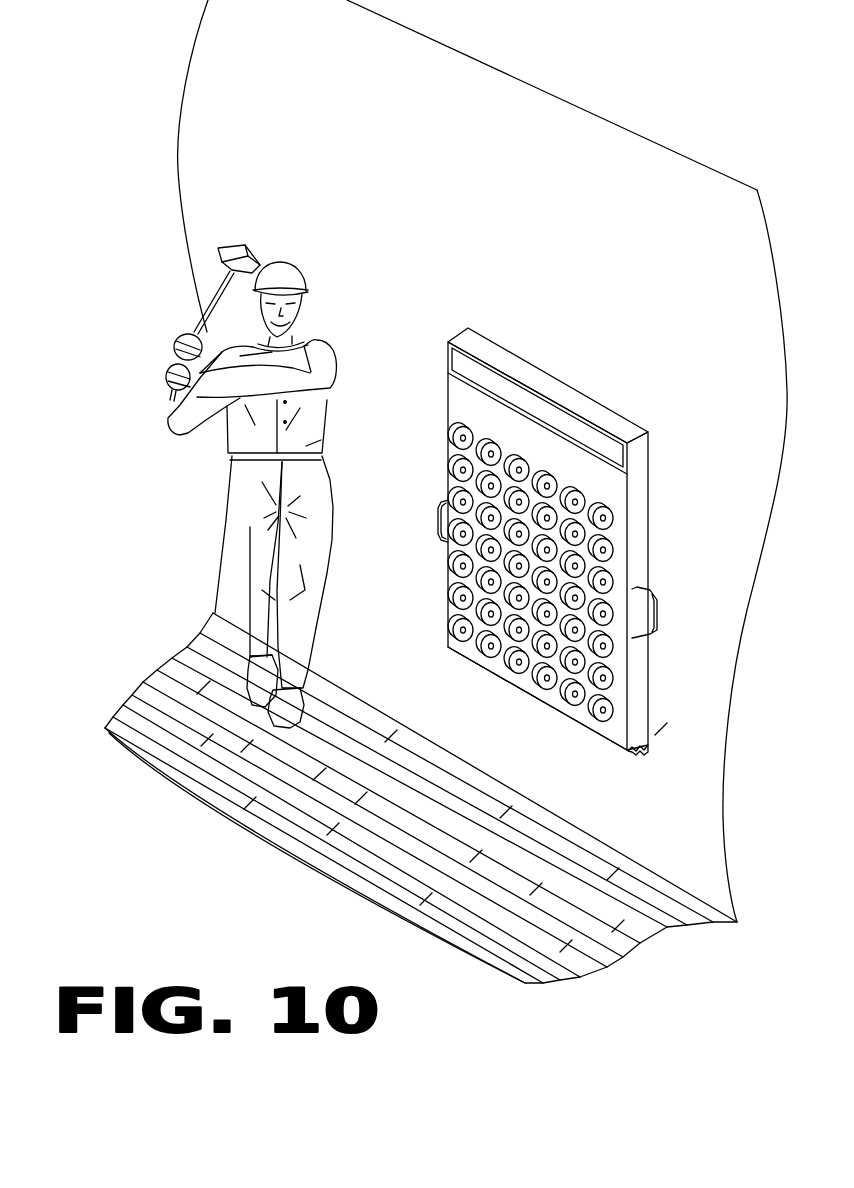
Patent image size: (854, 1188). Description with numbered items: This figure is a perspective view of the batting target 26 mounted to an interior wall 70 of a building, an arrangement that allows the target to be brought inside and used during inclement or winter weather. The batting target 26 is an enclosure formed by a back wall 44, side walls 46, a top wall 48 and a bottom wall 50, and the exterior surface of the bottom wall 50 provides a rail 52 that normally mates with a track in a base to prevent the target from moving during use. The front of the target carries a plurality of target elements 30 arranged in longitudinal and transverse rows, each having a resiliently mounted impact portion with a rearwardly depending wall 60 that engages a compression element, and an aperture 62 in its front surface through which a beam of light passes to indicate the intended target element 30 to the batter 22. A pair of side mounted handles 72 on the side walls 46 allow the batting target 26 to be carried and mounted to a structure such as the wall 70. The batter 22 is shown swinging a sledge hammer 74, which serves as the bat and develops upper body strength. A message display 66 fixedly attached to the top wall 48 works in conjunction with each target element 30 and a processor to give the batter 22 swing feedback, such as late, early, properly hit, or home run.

The batter 22 is at (287, 273).
The batting target 26 is at (657, 473).
The target element 30 is at (455, 443).
The back wall 44 is at (650, 652).
The side wall 46 is at (640, 520).
The top wall 48 is at (465, 382).
The bottom wall 50 is at (540, 703).
The rail 52 is at (648, 752).
The rearwardly depending wall 60 is at (613, 708).
The aperture 62 is at (460, 630).
The message display 66 is at (548, 382).
The wall 70 is at (586, 142).
The handle 72 is at (439, 520).
The sledge hammer 74 is at (198, 332).